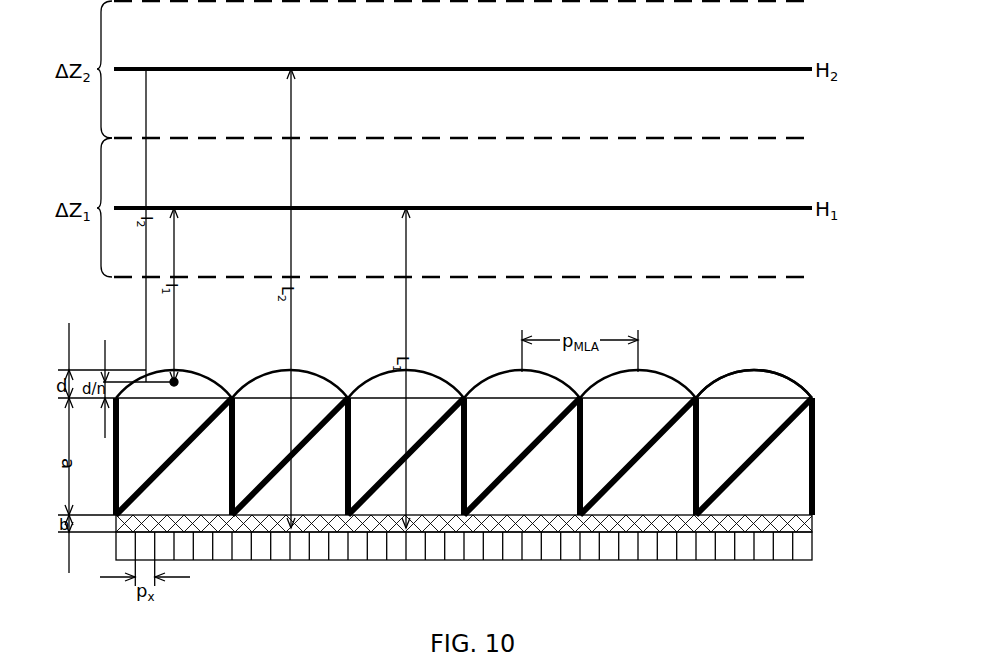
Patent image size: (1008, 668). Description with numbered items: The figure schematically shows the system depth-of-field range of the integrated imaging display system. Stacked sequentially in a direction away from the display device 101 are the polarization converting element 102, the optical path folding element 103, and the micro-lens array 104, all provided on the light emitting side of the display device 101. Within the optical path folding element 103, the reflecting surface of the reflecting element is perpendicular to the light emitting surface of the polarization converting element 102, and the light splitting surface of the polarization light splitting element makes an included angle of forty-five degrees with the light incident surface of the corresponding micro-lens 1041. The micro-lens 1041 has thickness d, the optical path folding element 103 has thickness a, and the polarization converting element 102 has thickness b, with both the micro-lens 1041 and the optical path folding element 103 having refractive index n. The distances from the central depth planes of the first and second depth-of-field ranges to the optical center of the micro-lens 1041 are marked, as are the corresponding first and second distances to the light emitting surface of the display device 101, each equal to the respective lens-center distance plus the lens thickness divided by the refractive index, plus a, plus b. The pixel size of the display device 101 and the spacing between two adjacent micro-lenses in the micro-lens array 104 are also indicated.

The display device 101 is at (812, 552).
The polarization converting element 102 is at (812, 523).
The optical path folding element 103 is at (812, 457).
The micro-lens array 104 is at (812, 390).
The micro-lens 1041 is at (757, 375).